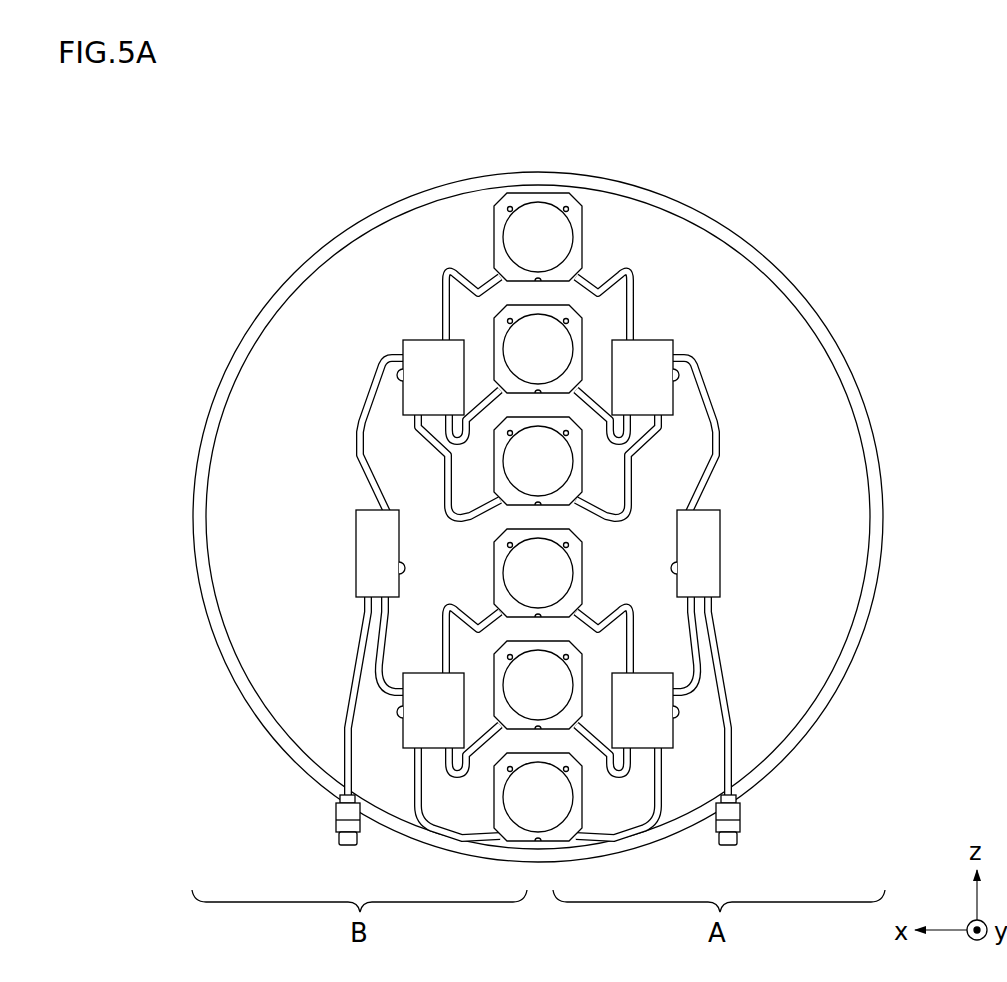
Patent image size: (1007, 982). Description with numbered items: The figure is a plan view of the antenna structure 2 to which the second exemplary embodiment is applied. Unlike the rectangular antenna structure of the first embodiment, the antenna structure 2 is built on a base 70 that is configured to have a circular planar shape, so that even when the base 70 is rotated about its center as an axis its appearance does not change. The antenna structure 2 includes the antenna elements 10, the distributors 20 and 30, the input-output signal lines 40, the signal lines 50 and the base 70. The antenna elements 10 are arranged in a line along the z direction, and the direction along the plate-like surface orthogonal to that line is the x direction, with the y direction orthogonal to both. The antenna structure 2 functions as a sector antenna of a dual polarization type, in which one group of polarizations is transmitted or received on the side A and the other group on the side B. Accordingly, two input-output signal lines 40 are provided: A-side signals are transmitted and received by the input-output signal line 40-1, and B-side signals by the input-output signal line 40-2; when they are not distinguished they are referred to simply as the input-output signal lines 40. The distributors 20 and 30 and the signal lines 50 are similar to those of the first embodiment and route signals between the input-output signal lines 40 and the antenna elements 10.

The antenna structure 2 is at (714, 133).
The antenna element 10 is at (538, 194).
The distributor 20 is at (723, 538).
The distributor 30 is at (673, 347).
The input-output signal line 40 is at (569, 720).
The input-output signal line 40-1 is at (737, 746).
The input-output signal line 40-2 is at (340, 750).
The signal line 50 is at (569, 488).
The base 70 is at (780, 252).